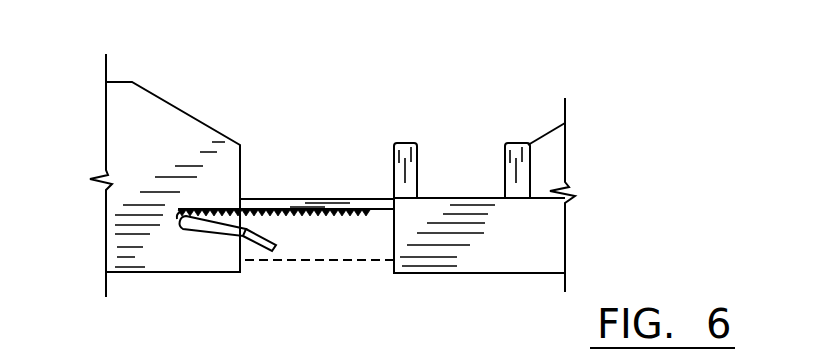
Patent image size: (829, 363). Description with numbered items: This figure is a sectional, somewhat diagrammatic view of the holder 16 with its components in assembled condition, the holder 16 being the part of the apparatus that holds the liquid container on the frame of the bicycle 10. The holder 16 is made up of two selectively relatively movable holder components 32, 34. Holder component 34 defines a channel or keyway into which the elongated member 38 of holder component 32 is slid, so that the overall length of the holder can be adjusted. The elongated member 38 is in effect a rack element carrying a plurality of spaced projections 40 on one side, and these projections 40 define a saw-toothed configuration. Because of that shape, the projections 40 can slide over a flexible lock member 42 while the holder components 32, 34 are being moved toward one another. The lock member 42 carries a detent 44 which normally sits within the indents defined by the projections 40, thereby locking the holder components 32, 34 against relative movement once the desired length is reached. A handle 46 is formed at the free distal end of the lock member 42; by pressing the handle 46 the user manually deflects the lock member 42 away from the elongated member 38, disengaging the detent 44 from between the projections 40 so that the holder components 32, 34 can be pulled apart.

The bicycle 10 is at (337, 260).
The holder 16 is at (447, 197).
The holder component 32 is at (617, 119).
The holder component 34 is at (140, 125).
The elongated member 38 is at (285, 205).
The projections 40 is at (313, 218).
The lock member 42 is at (233, 237).
The detent 44 is at (274, 195).
The handle 46 is at (257, 240).